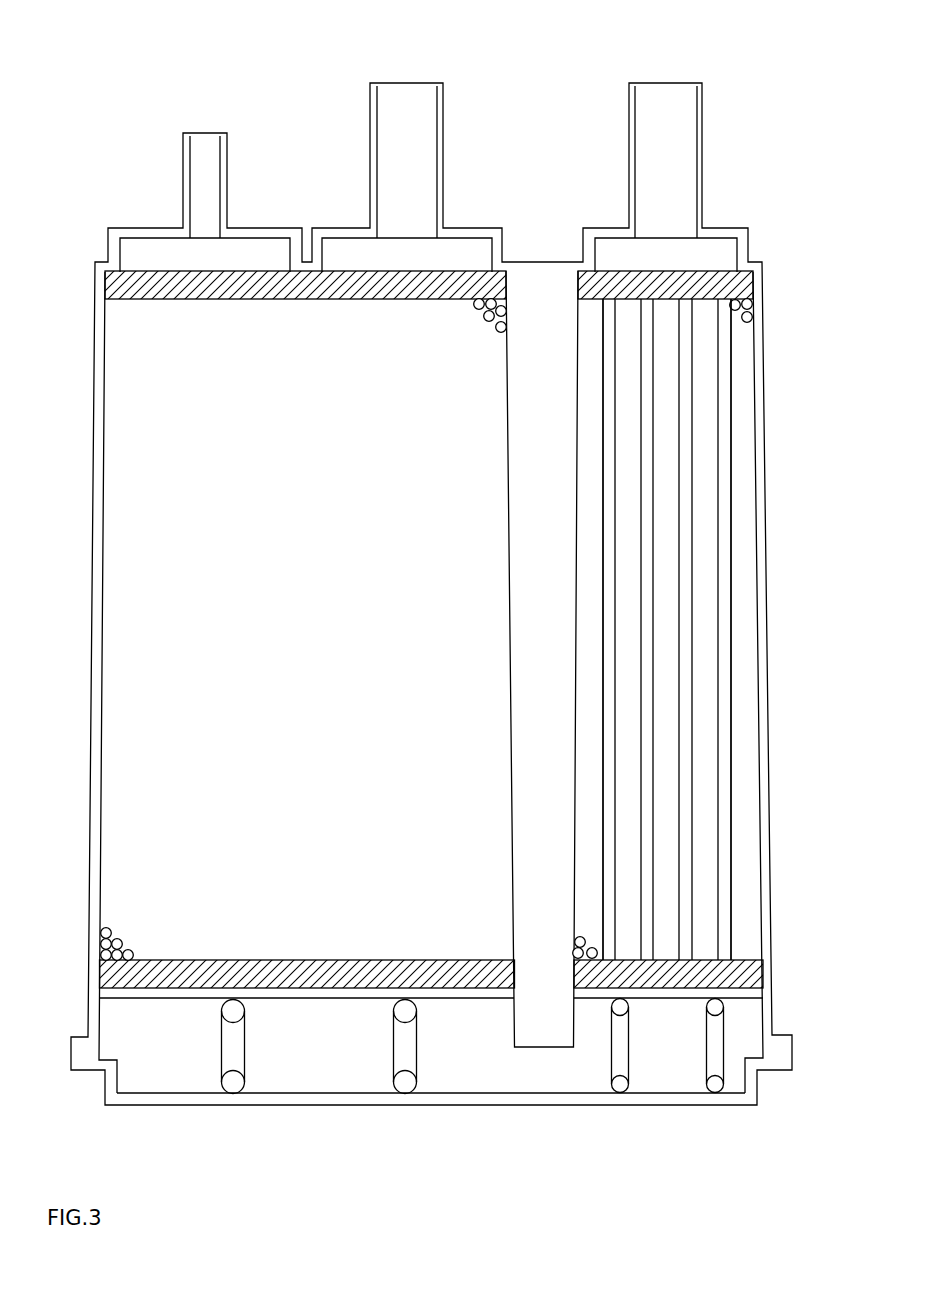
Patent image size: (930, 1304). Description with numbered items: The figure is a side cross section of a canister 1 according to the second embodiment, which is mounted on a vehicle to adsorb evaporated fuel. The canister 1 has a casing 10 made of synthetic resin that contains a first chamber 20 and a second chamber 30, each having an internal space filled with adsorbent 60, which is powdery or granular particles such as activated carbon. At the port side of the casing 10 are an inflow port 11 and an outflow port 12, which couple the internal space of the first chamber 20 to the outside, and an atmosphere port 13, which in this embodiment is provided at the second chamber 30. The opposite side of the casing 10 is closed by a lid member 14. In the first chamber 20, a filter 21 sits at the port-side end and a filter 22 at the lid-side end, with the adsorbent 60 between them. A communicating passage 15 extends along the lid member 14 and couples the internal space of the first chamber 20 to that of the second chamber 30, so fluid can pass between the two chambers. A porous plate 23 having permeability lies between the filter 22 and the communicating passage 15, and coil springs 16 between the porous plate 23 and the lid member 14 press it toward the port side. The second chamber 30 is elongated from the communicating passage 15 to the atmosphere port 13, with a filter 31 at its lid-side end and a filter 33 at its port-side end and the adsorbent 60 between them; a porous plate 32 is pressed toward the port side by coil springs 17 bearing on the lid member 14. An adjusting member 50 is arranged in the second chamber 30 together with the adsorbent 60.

The canister 1 is at (742, 62).
The casing 10 is at (147, 142).
The inflow port 11 is at (228, 174).
The outflow port 12 is at (444, 121).
The atmosphere port 13 is at (703, 131).
The lid member 14 is at (480, 1098).
The communicating passage 15 is at (538, 1075).
The coil springs 16 is at (400, 1083).
The coil springs 17 is at (715, 1083).
The first chamber 20 is at (100, 457).
The filter 21 is at (117, 292).
The filter 22 is at (110, 972).
The porous plate 23 is at (128, 992).
The second chamber 30 is at (763, 697).
The filter 31 is at (740, 972).
The porous plate 32 is at (733, 990).
The filter 33 is at (737, 283).
The adjusting member 50 is at (738, 358).
The adsorbent 60 is at (137, 700).